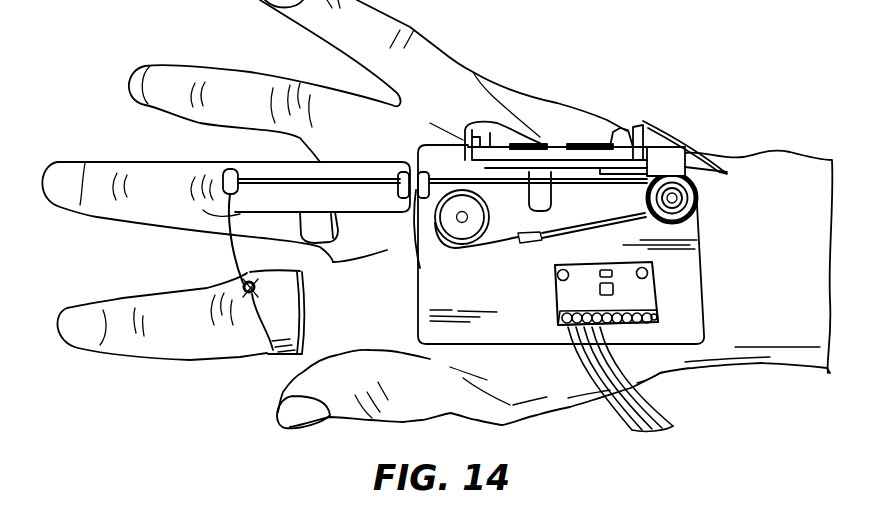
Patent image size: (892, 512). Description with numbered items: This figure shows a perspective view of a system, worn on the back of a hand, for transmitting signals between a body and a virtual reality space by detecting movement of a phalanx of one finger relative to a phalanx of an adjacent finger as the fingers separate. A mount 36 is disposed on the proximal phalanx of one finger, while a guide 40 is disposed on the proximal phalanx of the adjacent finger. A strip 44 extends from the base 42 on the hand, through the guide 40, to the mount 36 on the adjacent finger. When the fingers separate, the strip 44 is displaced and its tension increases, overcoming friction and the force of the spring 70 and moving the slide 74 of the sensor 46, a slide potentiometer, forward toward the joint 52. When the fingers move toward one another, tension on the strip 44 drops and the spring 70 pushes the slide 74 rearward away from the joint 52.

The mount 36 is at (273, 327).
The guide 40 is at (267, 170).
The base 42 is at (690, 285).
The strip 44 is at (228, 250).
The sensor 46 is at (545, 150).
The joint 52 is at (367, 230).
The spring 70 is at (485, 245).
The slide 74 is at (550, 193).